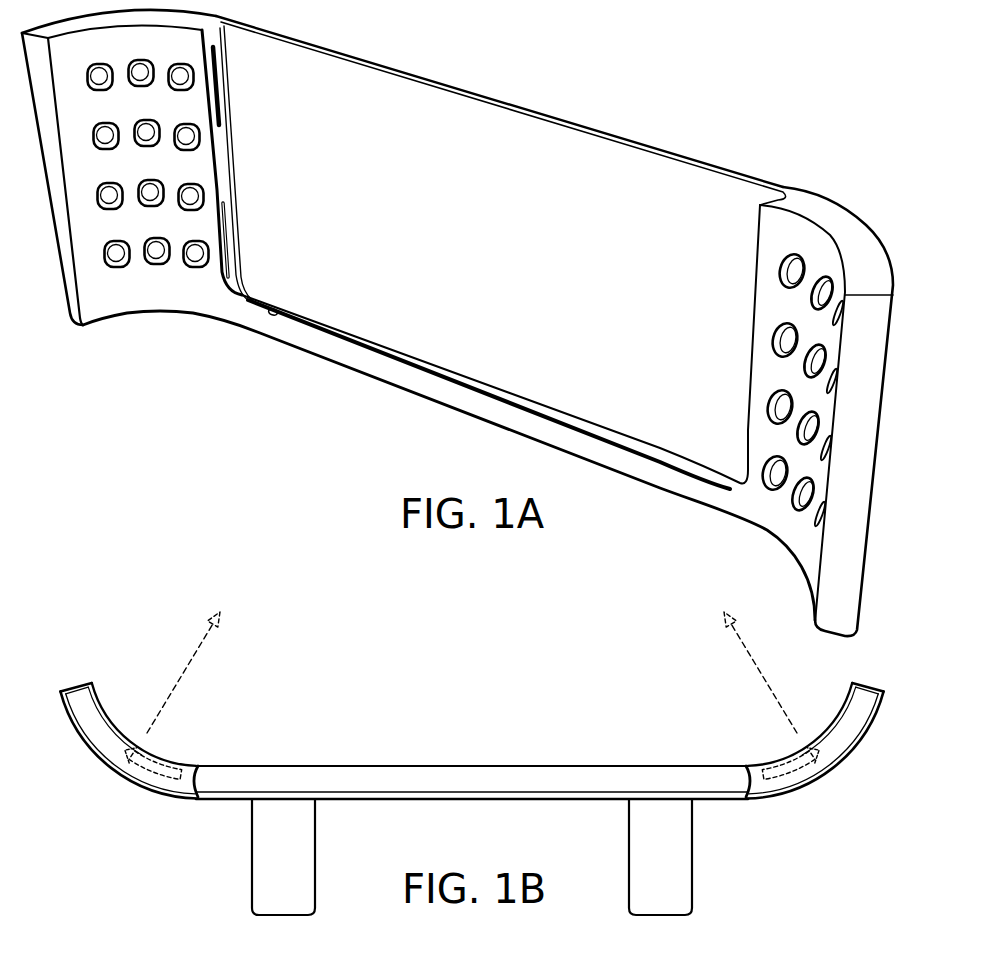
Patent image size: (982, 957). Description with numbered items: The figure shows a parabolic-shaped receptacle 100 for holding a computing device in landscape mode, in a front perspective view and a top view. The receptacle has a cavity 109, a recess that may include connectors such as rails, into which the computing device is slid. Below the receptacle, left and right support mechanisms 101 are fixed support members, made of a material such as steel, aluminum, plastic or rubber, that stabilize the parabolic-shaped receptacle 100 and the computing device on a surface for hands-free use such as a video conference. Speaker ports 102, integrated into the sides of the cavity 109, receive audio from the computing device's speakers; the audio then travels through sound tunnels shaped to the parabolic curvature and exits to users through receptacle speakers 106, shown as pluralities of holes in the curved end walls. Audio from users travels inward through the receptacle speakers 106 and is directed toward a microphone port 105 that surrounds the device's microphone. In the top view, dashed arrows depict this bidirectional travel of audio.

In FIG. 1A, the parabolic-shaped receptacle 100 is at (664, 106).
In FIG. 1B, the support mechanism 101 is at (280, 877).
In FIG. 1A, the speaker port 102 is at (223, 237).
In FIG. 1A, the microphone port 105 is at (291, 306).
In FIG. 1A, the receptacle speaker 106 is at (127, 258).
In FIG. 1B, the receptacle speaker 106 is at (163, 760).
In FIG. 1A, the cavity 109 is at (504, 271).
In FIG. 1B, the cavity 109 is at (413, 780).